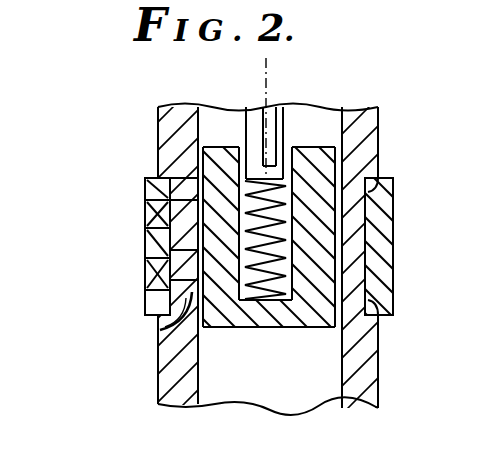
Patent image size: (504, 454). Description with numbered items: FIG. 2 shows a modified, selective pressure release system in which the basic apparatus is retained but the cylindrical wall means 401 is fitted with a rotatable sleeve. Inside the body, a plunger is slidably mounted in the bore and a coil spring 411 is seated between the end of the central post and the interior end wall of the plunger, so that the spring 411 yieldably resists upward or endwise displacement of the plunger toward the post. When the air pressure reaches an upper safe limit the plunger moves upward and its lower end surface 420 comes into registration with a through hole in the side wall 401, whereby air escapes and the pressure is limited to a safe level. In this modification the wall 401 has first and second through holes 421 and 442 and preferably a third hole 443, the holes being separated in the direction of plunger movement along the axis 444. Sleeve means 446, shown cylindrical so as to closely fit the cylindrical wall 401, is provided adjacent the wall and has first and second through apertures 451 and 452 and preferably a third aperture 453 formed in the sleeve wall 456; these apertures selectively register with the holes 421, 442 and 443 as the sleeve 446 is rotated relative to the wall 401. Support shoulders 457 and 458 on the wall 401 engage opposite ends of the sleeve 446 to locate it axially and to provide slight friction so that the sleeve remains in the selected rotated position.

The side wall 401 is at (163, 363).
The coil spring 411 is at (292, 232).
The lower end surface 420 is at (300, 328).
The first through hole 421 is at (165, 178).
The second through hole 442 is at (148, 222).
The third through hole 443 is at (158, 330).
The axis 444 is at (267, 60).
The sleeve means 446 is at (388, 259).
The first through aperture 451 is at (147, 198).
The second through aperture 452 is at (150, 250).
The third through aperture 453 is at (147, 287).
The sleeve wall 456 is at (383, 197).
The support shoulder 457 is at (380, 184).
The support shoulder 458 is at (385, 308).